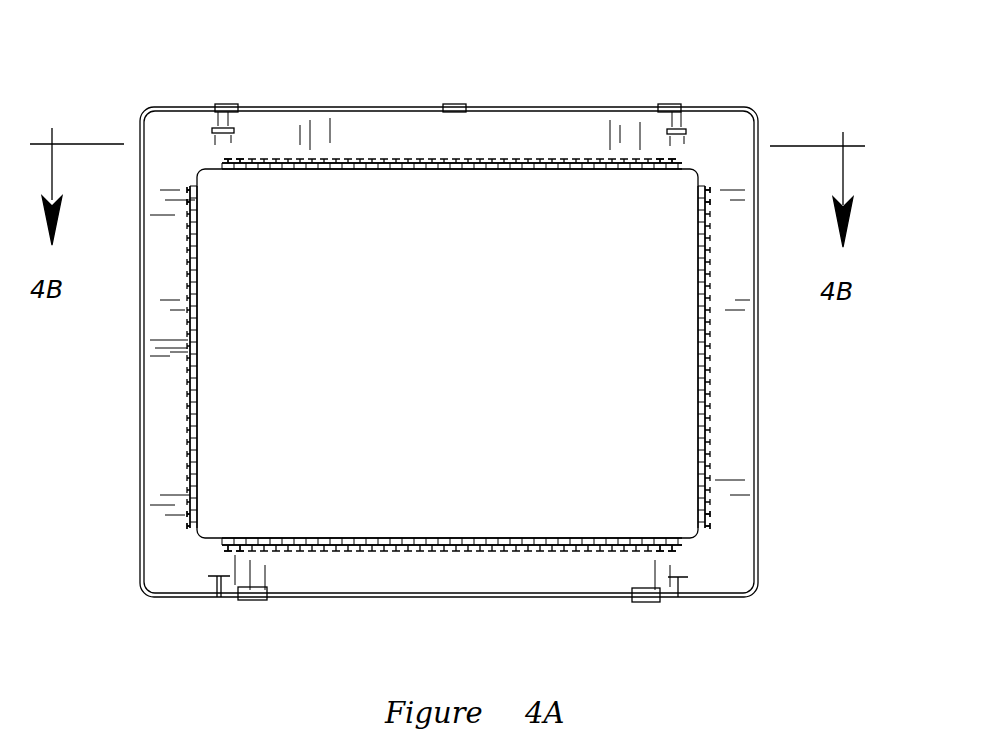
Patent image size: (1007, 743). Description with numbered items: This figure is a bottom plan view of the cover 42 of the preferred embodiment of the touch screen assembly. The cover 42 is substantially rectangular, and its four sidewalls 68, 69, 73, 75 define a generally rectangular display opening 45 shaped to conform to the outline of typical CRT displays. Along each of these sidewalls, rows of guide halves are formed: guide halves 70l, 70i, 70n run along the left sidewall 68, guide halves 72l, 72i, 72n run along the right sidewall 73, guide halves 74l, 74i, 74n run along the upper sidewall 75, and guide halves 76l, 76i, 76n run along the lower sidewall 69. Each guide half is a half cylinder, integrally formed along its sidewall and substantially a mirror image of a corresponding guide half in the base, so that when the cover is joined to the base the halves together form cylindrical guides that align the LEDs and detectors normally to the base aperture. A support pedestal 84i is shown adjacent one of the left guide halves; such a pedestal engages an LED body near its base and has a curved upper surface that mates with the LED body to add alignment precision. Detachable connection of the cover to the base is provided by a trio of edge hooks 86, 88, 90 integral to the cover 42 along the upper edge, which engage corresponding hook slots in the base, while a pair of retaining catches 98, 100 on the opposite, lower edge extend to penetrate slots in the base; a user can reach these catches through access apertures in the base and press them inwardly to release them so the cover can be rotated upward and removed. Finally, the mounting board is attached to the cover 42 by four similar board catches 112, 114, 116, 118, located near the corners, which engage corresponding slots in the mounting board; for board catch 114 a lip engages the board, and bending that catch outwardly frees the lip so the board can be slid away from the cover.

The cover 42 is at (140, 410).
The display opening 45 is at (510, 470).
The sidewall 68 is at (188, 247).
The sidewall 69 is at (335, 548).
The guide half 70l is at (188, 190).
The guide half 70i is at (188, 334).
The guide half 70n is at (188, 522).
The guide half 72l is at (708, 190).
The guide half 72i is at (708, 315).
The guide half 72n is at (708, 512).
The sidewall 73 is at (708, 430).
The guide half 74l is at (225, 162).
The guide half 74i is at (385, 162).
The guide half 74n is at (680, 162).
The sidewall 75 is at (508, 165).
The guide half 76l is at (225, 550).
The guide half 76i is at (420, 551).
The guide half 76n is at (690, 551).
The support pedestal 84i is at (150, 345).
The edge hook 86 is at (230, 104).
The edge hook 88 is at (455, 104).
The edge hook 90 is at (668, 104).
The retaining catch 98 is at (252, 600).
The retaining catch 100 is at (648, 602).
The board catch 112 is at (678, 598).
The board catch 114 is at (217, 598).
The board catch 116 is at (682, 129).
The board catch 118 is at (216, 128).